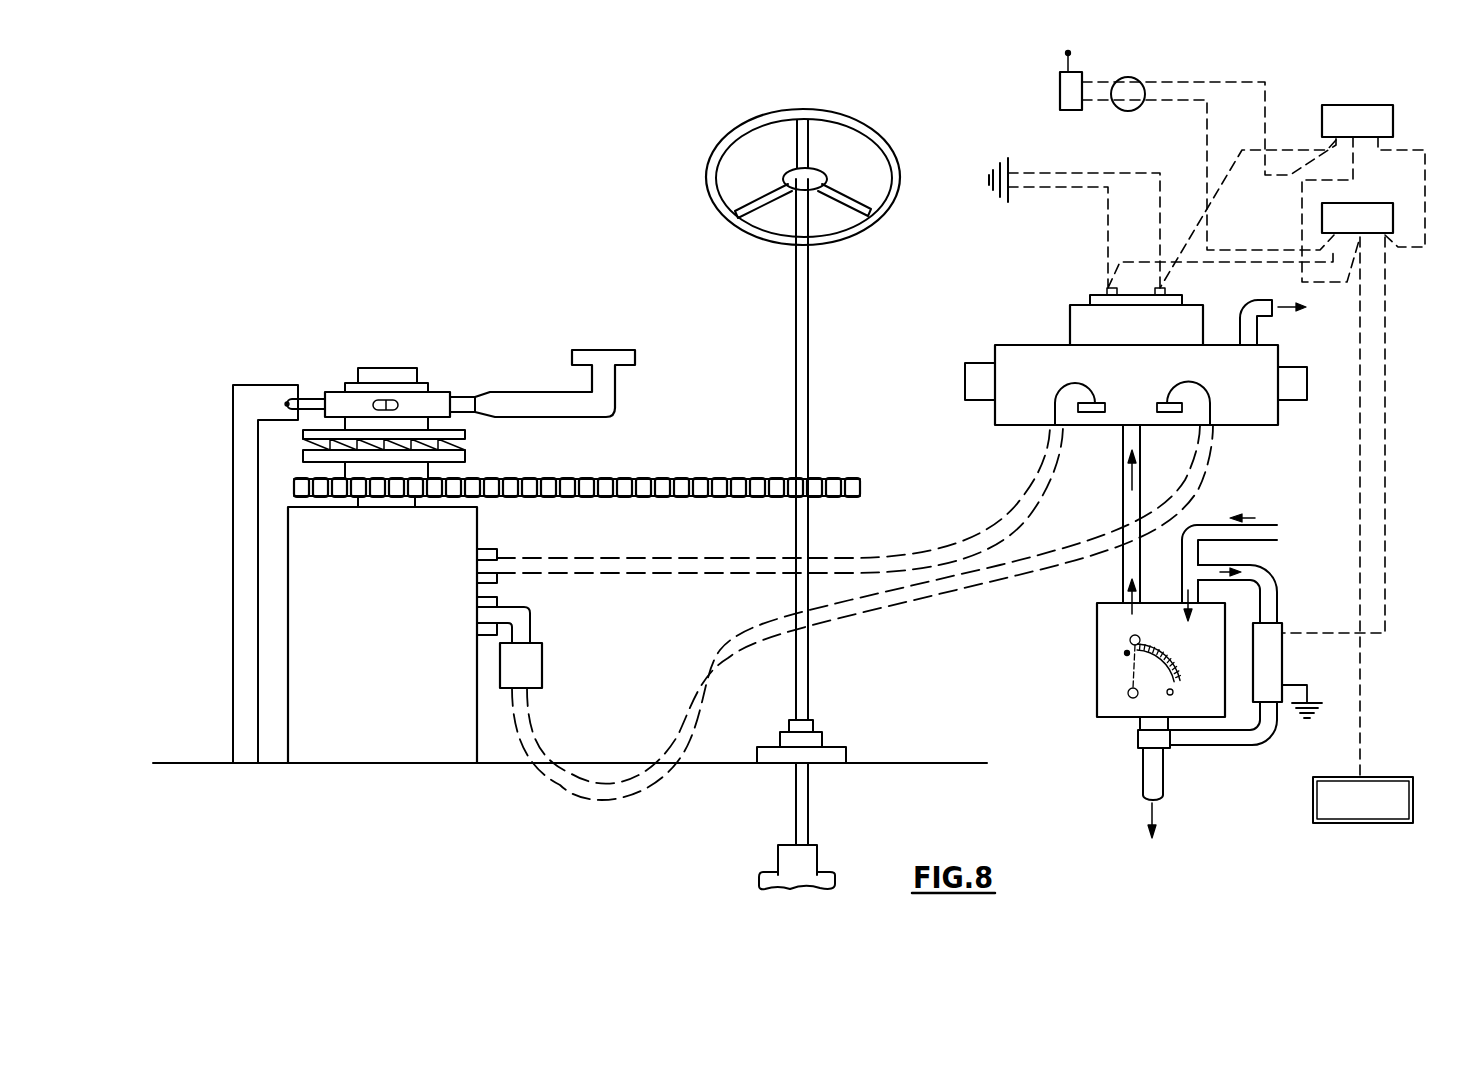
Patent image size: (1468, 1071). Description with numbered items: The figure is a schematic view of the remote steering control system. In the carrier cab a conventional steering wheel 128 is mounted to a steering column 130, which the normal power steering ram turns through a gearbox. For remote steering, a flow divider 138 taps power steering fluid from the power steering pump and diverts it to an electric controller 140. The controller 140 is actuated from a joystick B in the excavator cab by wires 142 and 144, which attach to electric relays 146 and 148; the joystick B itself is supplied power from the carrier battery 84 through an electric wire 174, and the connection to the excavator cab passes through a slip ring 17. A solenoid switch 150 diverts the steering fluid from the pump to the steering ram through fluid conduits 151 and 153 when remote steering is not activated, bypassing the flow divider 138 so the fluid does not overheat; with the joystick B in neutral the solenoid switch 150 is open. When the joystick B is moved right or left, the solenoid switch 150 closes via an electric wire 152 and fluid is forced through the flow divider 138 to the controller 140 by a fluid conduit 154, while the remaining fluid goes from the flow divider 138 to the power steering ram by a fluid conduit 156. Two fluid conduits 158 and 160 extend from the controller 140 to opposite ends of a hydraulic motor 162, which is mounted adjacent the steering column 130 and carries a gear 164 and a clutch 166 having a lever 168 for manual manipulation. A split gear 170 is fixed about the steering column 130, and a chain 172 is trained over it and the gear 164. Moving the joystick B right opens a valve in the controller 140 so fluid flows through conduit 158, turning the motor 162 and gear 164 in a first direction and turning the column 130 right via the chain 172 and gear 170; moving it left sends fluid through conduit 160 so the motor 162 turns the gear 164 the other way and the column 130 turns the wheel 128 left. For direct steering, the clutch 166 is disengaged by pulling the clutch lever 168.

The steering wheel 128 is at (817, 112).
The steering column 130 is at (809, 368).
The lever 168 is at (600, 350).
The clutch 166 is at (466, 432).
The gear 164 is at (467, 478).
The chain 172 is at (665, 478).
The split gear 170 is at (832, 478).
The hydraulic motor 162 is at (394, 641).
The fluid conduit 160 is at (1040, 468).
The fluid conduit 158 is at (1212, 462).
The electric controller 140 is at (1030, 345).
The fluid conduit 154 is at (1123, 494).
The flow divider 138 is at (1097, 680).
The fluid conduit 151 is at (1278, 607).
The solenoid switch 150 is at (1282, 665).
The fluid conduit 153 is at (1265, 742).
The fluid conduit 156 is at (1163, 787).
The carrier battery 84 is at (1347, 823).
The electric wire 174 is at (1360, 718).
The electric wire 152 is at (1385, 592).
The joystick B is at (1060, 88).
The slip ring 17 is at (1133, 79).
The wire 142 is at (1210, 82).
The wire 144 is at (1180, 102).
The electric relay 146 is at (1350, 105).
The electric relay 148 is at (1350, 203).